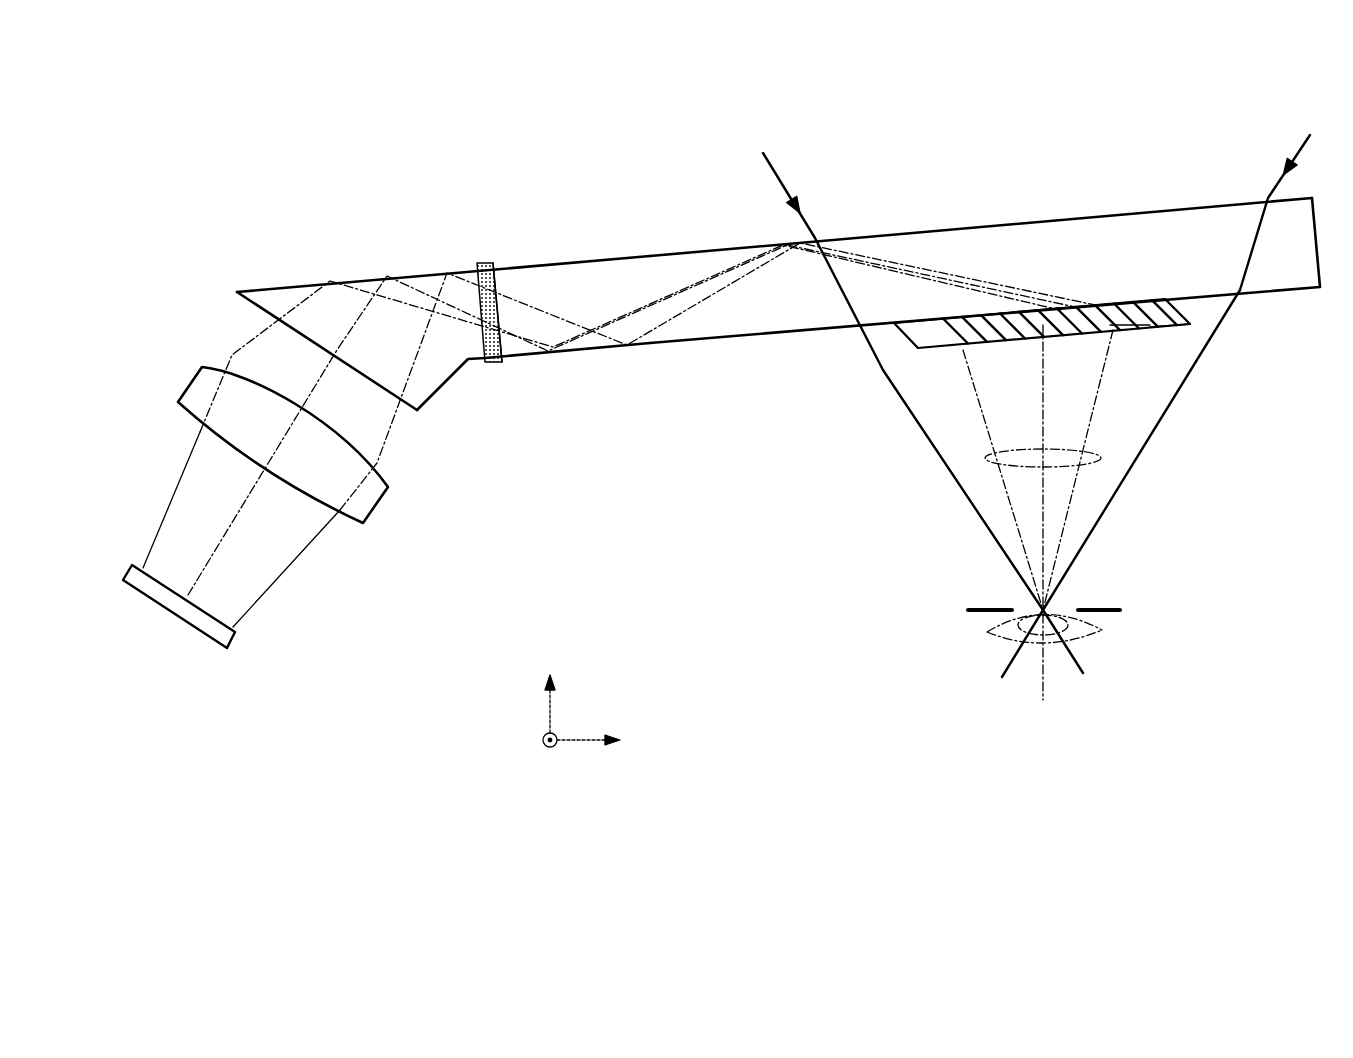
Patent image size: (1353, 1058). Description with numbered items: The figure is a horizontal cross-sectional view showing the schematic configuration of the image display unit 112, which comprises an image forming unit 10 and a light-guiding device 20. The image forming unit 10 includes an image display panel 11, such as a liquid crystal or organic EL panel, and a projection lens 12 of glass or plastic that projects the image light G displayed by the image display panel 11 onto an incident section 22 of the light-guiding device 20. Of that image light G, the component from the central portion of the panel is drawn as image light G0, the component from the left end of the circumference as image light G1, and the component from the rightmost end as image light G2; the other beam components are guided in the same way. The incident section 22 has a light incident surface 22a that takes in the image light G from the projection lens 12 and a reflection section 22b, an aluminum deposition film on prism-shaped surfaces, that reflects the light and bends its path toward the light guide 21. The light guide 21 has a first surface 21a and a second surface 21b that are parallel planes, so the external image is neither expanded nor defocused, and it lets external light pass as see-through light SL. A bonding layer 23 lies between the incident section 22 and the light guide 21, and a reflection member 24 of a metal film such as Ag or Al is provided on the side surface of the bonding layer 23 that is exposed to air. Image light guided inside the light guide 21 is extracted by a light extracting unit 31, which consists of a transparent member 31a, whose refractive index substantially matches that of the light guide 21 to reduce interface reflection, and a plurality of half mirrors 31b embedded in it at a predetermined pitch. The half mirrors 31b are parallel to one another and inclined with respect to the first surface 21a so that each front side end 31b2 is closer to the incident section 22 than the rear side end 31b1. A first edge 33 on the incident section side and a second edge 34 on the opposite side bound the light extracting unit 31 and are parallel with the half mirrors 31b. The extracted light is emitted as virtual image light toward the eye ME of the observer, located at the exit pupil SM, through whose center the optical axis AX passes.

The image display unit 112 is at (570, 160).
The image forming unit 10 is at (437, 582).
The image display panel 11 is at (223, 635).
The projection lens 12 is at (367, 507).
The light-guiding device 20 is at (792, 556).
The light guide 21 is at (718, 348).
The first surface 21a is at (1182, 300).
The second surface 21b is at (927, 236).
The incident section 22 is at (434, 404).
The light incident surface 22a is at (243, 312).
The reflection section 22b is at (290, 286).
The bonding layer 23 is at (498, 280).
The reflection member 24 is at (483, 262).
The light extracting unit 31 is at (937, 360).
The transparent member 31a is at (1038, 310).
The half mirrors 31b is at (1066, 316).
The rear side end 31b1 is at (1187, 330).
The front side end 31b2 is at (1135, 318).
The first edge 33 is at (897, 335).
The second edge 34 is at (1197, 318).
The see-through light SL is at (777, 173).
The image light G is at (1093, 462).
The image light G1 is at (153, 542).
The image light G0 is at (207, 567).
The image light G2 is at (252, 598).
The exit pupil SM is at (1098, 607).
The eye ME is at (1088, 624).
The optical axis AX is at (1050, 688).